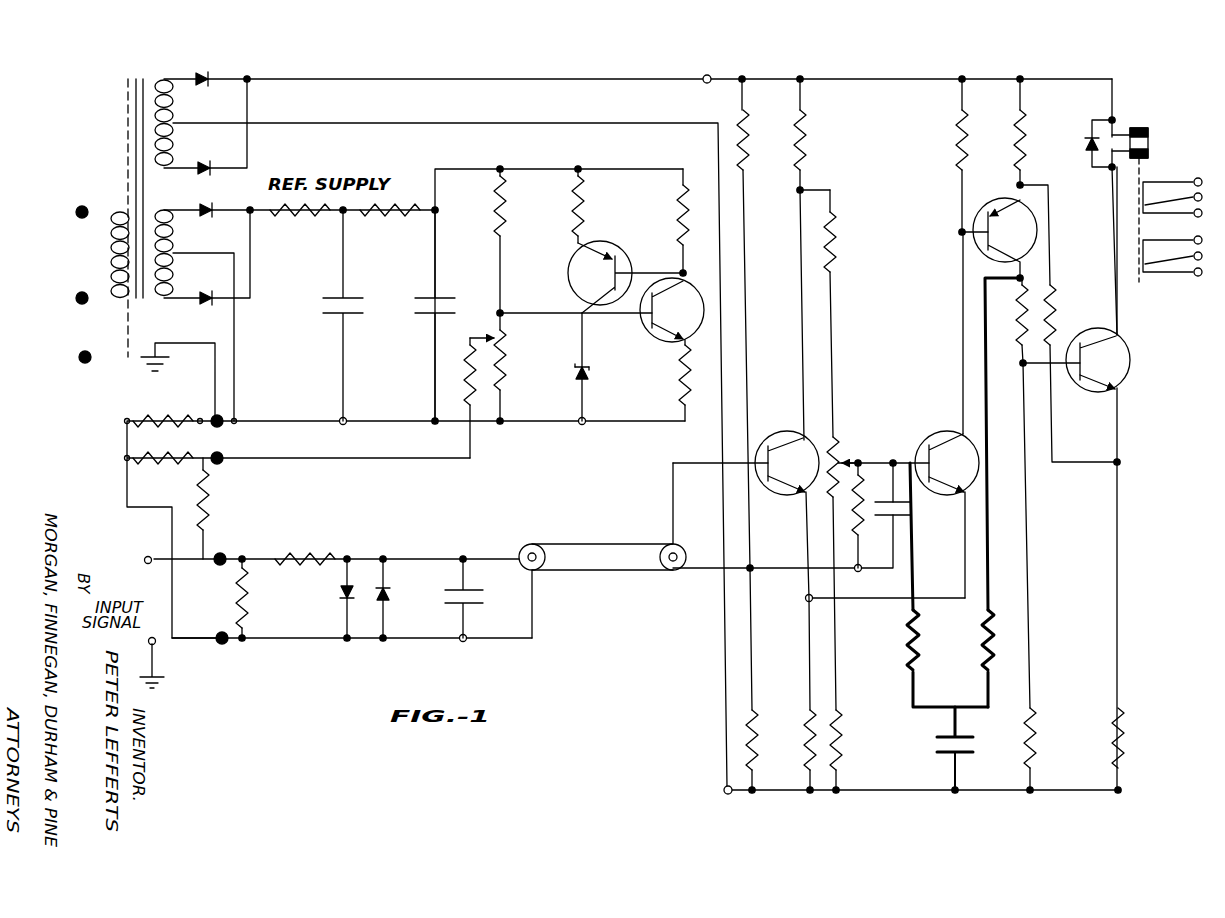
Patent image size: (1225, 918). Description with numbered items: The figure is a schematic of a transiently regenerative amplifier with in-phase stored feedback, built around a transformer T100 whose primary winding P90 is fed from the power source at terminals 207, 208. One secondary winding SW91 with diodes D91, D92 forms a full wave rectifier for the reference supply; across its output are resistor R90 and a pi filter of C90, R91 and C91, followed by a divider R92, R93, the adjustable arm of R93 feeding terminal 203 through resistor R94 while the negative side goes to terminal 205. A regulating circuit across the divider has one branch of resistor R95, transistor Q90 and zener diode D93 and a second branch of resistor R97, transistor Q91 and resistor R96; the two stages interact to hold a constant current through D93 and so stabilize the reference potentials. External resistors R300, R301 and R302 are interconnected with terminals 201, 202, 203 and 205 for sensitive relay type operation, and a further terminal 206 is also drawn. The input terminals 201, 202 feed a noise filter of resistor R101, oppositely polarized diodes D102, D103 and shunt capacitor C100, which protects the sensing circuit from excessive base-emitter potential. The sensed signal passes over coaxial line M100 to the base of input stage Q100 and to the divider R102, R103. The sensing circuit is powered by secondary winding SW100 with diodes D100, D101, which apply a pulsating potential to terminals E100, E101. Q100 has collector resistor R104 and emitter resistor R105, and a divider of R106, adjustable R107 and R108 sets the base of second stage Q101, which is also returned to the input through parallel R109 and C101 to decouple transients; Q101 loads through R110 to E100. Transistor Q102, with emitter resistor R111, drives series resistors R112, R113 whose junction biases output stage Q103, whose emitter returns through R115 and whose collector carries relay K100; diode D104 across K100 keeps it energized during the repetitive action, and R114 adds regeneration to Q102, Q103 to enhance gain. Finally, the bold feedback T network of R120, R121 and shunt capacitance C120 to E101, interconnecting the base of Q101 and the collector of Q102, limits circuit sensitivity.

The transformer T100 is at (110, 110).
The secondary winding SW100 is at (173, 118).
The diode D100 is at (200, 77).
The diode D101 is at (214, 163).
The secondary winding SW91 is at (174, 253).
The diode D92 is at (204, 206).
The diode D91 is at (204, 304).
The primary winding P90 is at (110, 245).
The terminal 208 is at (80, 208).
The terminal 207 is at (78, 299).
The terminal 206 is at (80, 360).
The resistor R90 is at (278, 220).
The resistor R91 is at (410, 222).
The capacitor C90 is at (326, 320).
The capacitor C91 is at (426, 320).
The resistor R92 is at (495, 192).
The adjustable resistor R93 is at (503, 368).
The resistor R94 is at (465, 358).
The resistor R95 is at (572, 195).
The resistor R97 is at (678, 218).
The transistor Q90 is at (568, 272).
The transistor Q91 is at (642, 326).
The zener diode D93 is at (588, 378).
The resistor R96 is at (680, 368).
The resistor R300 is at (160, 412).
The resistor R302 is at (140, 468).
The resistor R301 is at (212, 520).
The terminal 205 is at (214, 414).
The terminal 203 is at (224, 455).
The input terminal 201 is at (226, 555).
The input terminal 202 is at (218, 644).
The resistor R101 is at (290, 552).
The diode D102 is at (338, 595).
The diode D103 is at (388, 598).
The capacitor C100 is at (474, 608).
The coaxial line M100 is at (610, 572).
The terminal E100 is at (710, 77).
The terminal E101 is at (724, 790).
The resistor R102 is at (738, 126).
The resistor R103 is at (752, 715).
The resistor R104 is at (810, 124).
The resistor R105 is at (810, 755).
The resistor R106 is at (836, 230).
The adjustable resistor R107 is at (840, 446).
The resistor R108 is at (843, 750).
The resistor R109 is at (855, 532).
The capacitor C101 is at (885, 494).
The input stage transistor Q100 is at (790, 428).
The second stage transistor Q101 is at (948, 426).
The resistor R110 is at (955, 140).
The resistor R111 is at (1026, 124).
The power amplifying transistor Q102 is at (1008, 198).
The resistor R112 is at (1018, 314).
The resistor R113 is at (1036, 720).
The resistor R114 is at (1054, 300).
The resistor R115 is at (1124, 720).
The output stage transistor Q103 is at (1104, 392).
The diode D104 is at (1086, 143).
The output relay K100 is at (1148, 130).
The resistor R120 is at (922, 656).
The resistor R121 is at (982, 624).
The capacitance C120 is at (962, 756).